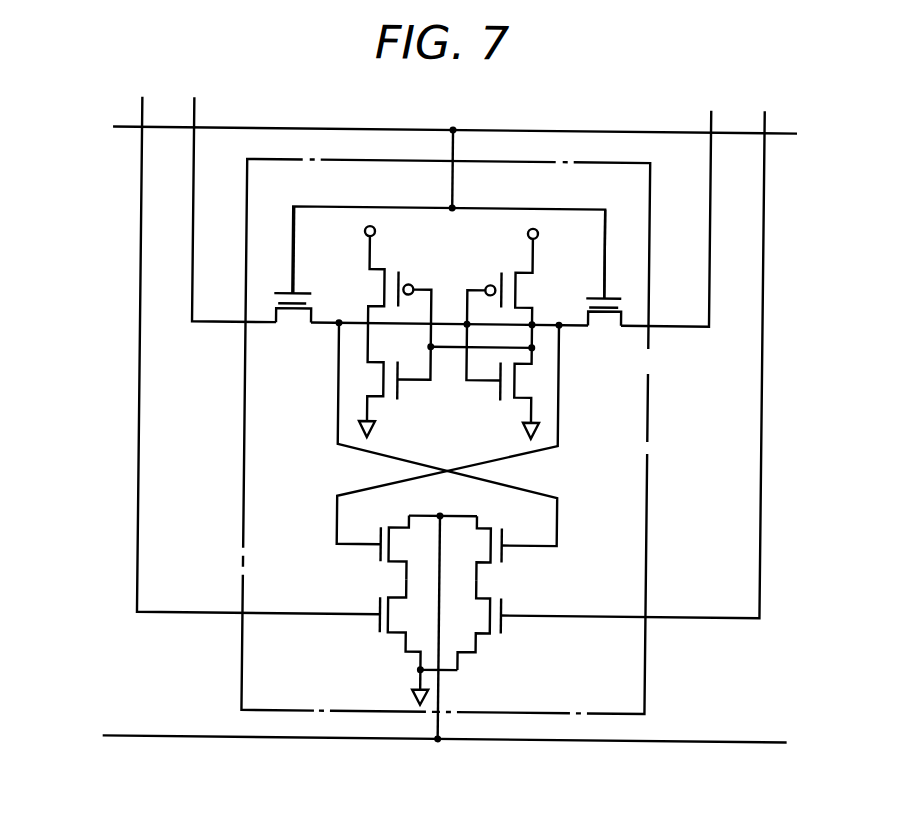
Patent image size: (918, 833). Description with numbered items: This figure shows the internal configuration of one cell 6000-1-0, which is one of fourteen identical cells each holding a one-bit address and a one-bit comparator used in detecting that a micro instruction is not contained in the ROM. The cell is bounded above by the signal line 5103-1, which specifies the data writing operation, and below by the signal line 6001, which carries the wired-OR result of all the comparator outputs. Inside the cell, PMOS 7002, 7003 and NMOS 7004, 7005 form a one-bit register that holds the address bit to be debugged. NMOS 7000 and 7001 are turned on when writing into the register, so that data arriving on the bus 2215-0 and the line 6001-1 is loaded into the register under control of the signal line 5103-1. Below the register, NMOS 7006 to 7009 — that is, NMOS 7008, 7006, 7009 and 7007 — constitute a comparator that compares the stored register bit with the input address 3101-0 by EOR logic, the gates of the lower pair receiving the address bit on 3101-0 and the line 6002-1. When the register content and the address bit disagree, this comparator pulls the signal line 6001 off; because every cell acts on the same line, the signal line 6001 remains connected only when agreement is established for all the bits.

The signal line 5103-1 is at (367, 130).
The supply line 6001-1 is at (708, 118).
The input line 6002-1 is at (762, 117).
The input address 3101-0 is at (139, 545).
The bus 2215-0 is at (191, 325).
The NMOS 7000 is at (291, 323).
The NMOS 7001 is at (604, 323).
The PMOS 7002 is at (379, 270).
The PMOS 7003 is at (503, 283).
The NMOS 7004 is at (396, 390).
The NMOS 7005 is at (526, 390).
The cell 6000-1-0 is at (648, 446).
The NMOS 7008 is at (382, 555).
The NMOS 7006 is at (504, 556).
The NMOS 7009 is at (382, 621).
The NMOS 7007 is at (504, 621).
The signal line 6001 is at (528, 740).